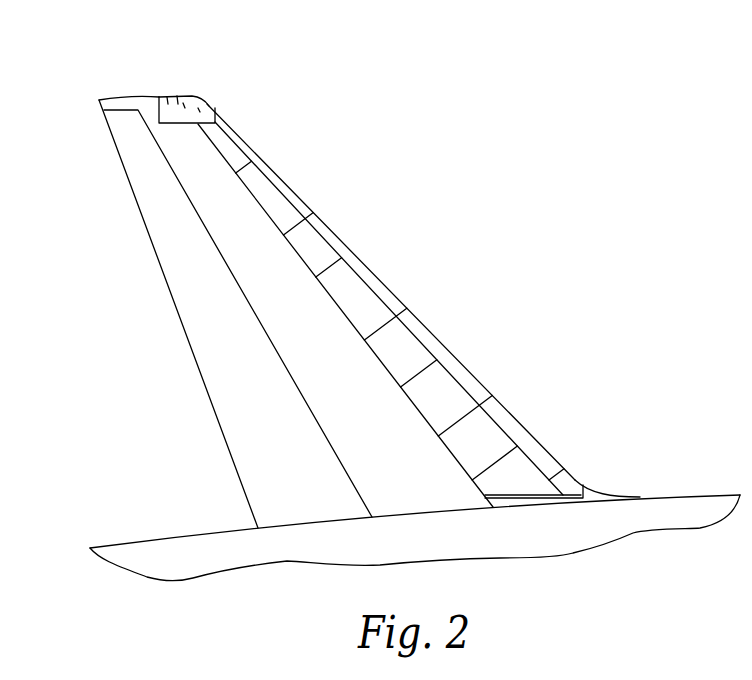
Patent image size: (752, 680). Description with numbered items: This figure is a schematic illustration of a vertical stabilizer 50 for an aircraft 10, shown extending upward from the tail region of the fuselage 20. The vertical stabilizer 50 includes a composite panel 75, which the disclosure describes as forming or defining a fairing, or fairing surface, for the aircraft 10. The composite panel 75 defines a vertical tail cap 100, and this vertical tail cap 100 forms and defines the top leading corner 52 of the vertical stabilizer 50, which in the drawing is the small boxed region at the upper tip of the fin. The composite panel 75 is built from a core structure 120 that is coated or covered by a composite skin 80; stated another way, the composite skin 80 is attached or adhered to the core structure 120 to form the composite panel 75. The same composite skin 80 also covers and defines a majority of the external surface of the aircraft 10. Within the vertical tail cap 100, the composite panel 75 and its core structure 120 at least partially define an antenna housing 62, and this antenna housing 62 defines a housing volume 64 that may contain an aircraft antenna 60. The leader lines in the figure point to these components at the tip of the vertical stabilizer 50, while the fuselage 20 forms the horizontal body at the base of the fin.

The aircraft 10 is at (574, 156).
The fuselage 20 is at (571, 558).
The vertical stabilizer 50 is at (112, 94).
The top leading corner 52 is at (216, 94).
The aircraft antenna 60 is at (183, 103).
The antenna housing 62 is at (177, 96).
The housing volume 64 is at (198, 108).
The composite panel 75 is at (350, 378).
The composite skin 80 is at (277, 300).
The vertical tail cap 100 is at (177, 126).
The core structure 120 is at (167, 97).